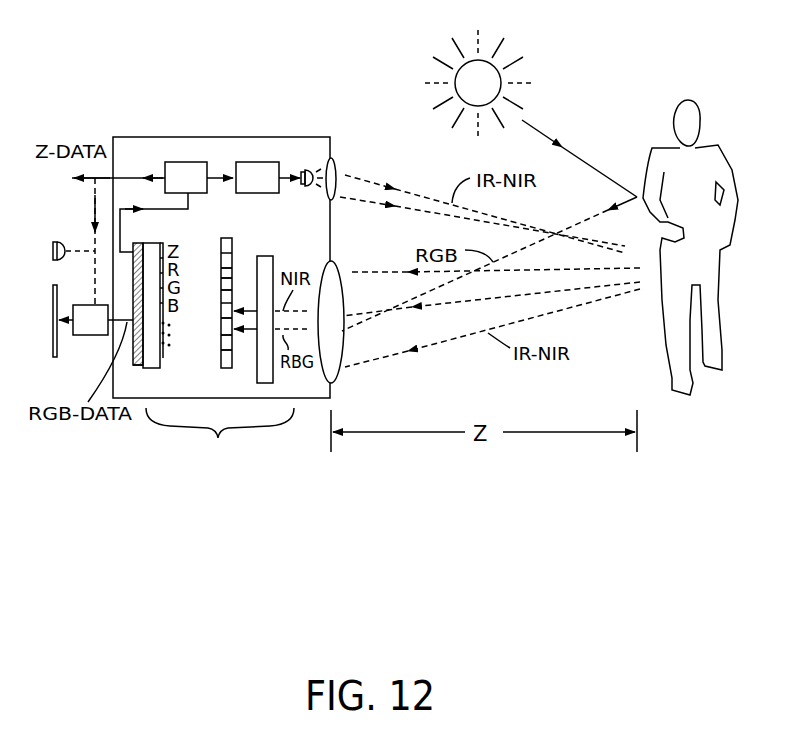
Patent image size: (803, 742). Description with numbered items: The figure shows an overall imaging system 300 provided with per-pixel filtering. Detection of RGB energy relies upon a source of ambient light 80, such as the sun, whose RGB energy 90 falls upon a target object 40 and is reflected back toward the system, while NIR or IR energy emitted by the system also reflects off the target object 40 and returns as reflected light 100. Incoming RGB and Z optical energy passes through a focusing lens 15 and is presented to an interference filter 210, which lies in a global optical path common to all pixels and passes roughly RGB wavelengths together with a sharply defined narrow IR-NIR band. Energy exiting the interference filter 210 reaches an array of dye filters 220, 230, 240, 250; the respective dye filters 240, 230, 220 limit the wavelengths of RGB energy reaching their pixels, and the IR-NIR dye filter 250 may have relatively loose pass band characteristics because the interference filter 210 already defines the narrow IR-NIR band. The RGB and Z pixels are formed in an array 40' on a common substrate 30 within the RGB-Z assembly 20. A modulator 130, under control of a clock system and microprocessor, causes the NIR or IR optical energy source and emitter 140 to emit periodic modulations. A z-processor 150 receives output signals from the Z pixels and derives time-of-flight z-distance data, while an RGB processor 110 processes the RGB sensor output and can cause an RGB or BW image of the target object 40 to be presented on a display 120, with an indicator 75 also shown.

The imaging system 300 is at (228, 126).
The z-processor 150 is at (200, 188).
The modulator 130 is at (271, 188).
The optical emitter with lens 140 is at (308, 170).
The array 40' is at (154, 290).
The substrate 30 is at (138, 366).
The RGB processor 110 is at (104, 331).
The indicator 75 is at (51, 248).
The display 120 is at (51, 311).
The IR-NIR dye filter 250 is at (226, 238).
The dye filter 240 is at (228, 265).
The dye filter 230 is at (221, 276).
The dye filter 220 is at (221, 291).
The interference filter 210 is at (274, 262).
The focusing lens 15 is at (340, 268).
The RGB-Z 20 is at (220, 441).
The source of ambient light 80 is at (488, 93).
The RGB energy 90 is at (533, 130).
The reflected light 100 is at (587, 215).
The target object 40 is at (670, 247).